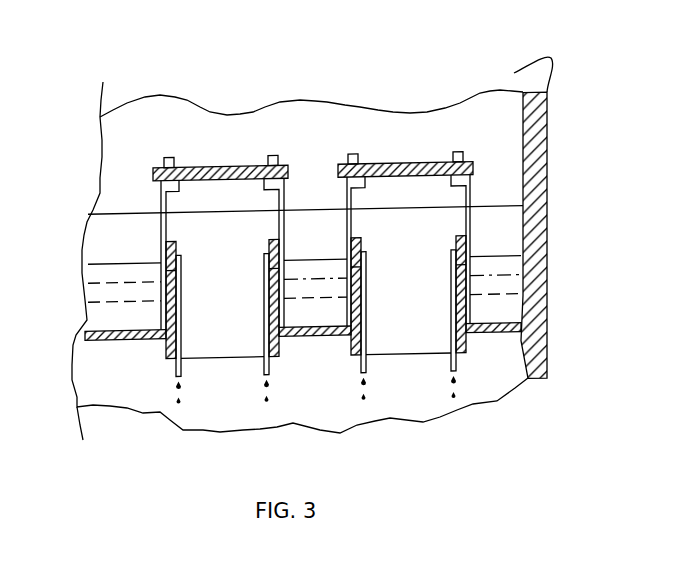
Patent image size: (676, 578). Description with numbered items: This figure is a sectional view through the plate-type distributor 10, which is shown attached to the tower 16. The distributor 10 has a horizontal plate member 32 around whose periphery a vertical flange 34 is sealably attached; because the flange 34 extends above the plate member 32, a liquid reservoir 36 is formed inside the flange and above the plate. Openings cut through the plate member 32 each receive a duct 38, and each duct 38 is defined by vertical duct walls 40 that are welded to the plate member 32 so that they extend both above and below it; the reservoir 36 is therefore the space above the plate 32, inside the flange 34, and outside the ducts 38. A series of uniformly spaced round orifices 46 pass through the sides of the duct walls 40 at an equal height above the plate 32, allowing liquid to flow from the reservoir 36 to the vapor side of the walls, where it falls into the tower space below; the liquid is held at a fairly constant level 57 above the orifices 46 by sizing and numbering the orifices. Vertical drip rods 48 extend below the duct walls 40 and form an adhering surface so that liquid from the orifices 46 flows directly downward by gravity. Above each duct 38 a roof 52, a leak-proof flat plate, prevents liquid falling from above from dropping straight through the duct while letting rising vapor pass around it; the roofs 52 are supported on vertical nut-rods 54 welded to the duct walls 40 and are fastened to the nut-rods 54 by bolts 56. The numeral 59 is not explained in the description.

The distributor 10 is at (297, 123).
The tower 16 is at (520, 74).
The horizontal plate member 32 is at (349, 356).
The vertical flange 34 is at (523, 210).
The liquid reservoir 36 is at (317, 297).
The duct 38 is at (222, 323).
The duct wall 40 is at (398, 352).
The orifice 46 is at (268, 262).
The drip rod 48 is at (268, 368).
The roof 52 is at (230, 167).
The nut-rod 54 is at (153, 192).
The bolt 56 is at (172, 163).
The liquid level 57 is at (498, 256).
The axis 59 is at (495, 278).